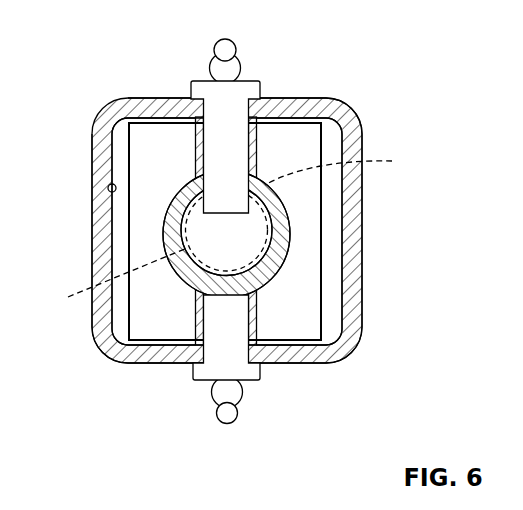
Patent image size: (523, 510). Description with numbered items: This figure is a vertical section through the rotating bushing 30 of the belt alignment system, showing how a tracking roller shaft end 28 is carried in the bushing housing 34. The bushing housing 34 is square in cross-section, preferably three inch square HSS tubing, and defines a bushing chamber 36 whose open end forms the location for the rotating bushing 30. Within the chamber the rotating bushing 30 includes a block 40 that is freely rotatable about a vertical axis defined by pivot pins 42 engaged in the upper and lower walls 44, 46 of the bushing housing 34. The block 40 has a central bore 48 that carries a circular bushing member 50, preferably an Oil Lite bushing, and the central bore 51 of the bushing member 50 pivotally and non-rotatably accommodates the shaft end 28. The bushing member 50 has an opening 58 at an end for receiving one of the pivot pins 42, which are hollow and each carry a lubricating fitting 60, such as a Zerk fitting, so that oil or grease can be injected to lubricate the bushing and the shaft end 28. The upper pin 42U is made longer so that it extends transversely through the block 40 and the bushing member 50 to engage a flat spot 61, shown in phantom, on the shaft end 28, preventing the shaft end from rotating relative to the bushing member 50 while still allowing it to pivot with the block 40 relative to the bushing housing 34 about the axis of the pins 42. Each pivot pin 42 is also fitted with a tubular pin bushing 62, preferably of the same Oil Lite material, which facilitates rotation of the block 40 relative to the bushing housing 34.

The rotating bushing 30 is at (237, 229).
The bushing housing 34 is at (230, 234).
The bushing chamber 36 is at (108, 190).
The block 40 is at (309, 147).
The upper wall 44 is at (151, 98).
The lower wall 46 is at (143, 364).
The opening 58 is at (190, 181).
The tubular pin bushing 62 is at (276, 144).
The central bore 48 is at (294, 251).
The bushing member 50 is at (278, 241).
The central bore 51 is at (273, 258).
The flat spot 61 is at (344, 168).
The shaft end 28 is at (112, 278).
The lubricating fitting 60 is at (213, 44).
The pivot pin 42U is at (248, 83).
The pivot pin 42 is at (204, 378).